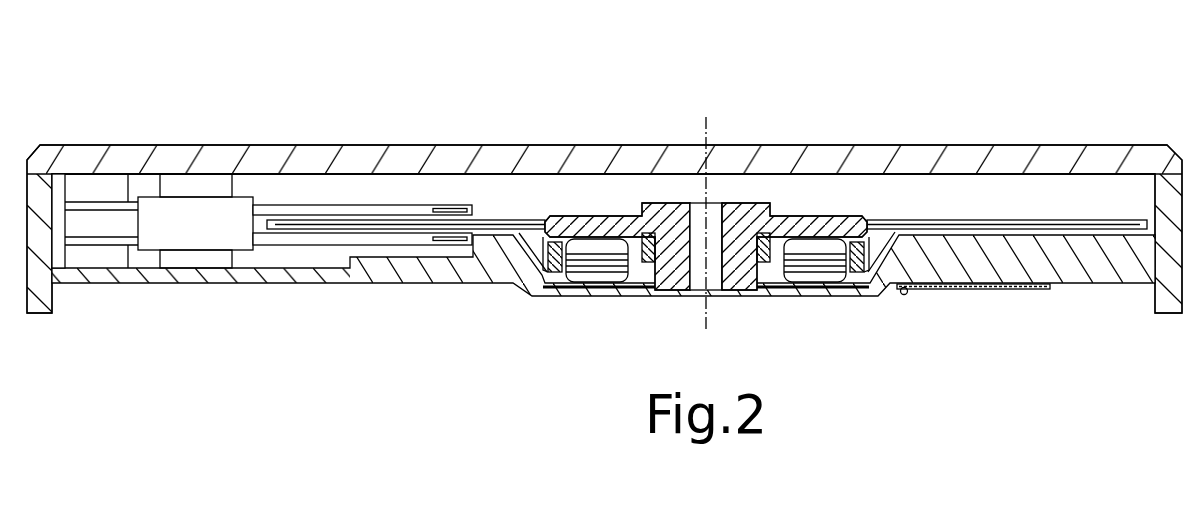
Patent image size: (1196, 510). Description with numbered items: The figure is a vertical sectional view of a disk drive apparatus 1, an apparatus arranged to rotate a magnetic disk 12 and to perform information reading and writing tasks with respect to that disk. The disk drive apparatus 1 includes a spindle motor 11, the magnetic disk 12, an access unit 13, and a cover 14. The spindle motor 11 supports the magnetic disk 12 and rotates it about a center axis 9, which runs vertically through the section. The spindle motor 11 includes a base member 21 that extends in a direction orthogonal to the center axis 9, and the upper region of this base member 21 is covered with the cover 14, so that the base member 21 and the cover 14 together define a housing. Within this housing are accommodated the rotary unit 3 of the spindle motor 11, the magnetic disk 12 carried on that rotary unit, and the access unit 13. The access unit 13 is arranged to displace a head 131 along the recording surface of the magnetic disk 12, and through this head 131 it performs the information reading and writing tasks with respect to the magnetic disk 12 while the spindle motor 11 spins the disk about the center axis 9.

The disk drive apparatus 1 is at (157, 122).
The rotary unit 3 is at (797, 222).
The center axis 9 is at (705, 128).
The spindle motor 11 is at (618, 205).
The magnetic disk 12 is at (1038, 225).
The access unit 13 is at (293, 193).
The cover 14 is at (910, 160).
The base member 21 is at (778, 284).
The head 131 is at (458, 207).